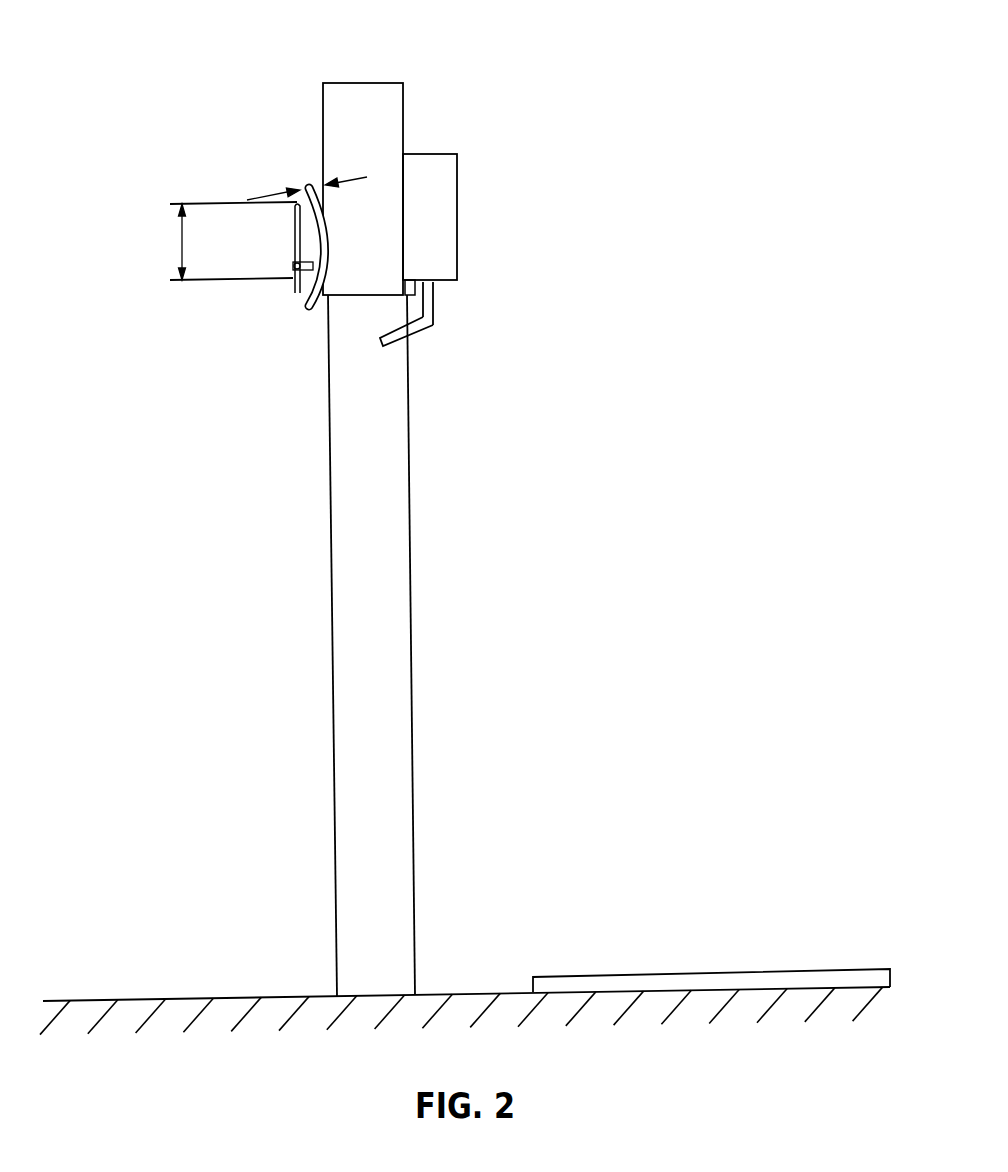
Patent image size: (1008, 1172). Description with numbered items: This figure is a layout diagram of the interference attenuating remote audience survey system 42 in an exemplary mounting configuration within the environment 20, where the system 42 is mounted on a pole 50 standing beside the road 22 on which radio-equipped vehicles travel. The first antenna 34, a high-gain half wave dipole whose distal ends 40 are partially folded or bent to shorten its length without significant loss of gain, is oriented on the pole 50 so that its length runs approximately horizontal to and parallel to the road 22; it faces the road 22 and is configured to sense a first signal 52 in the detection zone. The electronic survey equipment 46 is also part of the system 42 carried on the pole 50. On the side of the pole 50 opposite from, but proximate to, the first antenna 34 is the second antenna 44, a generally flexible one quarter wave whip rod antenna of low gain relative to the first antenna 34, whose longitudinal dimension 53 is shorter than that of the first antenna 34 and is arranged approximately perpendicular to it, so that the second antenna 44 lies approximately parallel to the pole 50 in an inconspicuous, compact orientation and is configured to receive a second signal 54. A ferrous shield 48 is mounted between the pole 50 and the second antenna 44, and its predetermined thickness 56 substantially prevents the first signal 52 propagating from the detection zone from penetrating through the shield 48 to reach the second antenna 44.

The environment 20 is at (686, 1072).
The road 22 is at (715, 970).
The first antenna 34 is at (436, 302).
The distal ends 40 is at (422, 333).
The interference attenuating remote audience survey system 42 is at (503, 170).
The second antenna 44 is at (293, 237).
The electronic survey equipment 46 is at (432, 154).
The ferrous shield 48 is at (310, 312).
The pole 50 is at (365, 82).
The first signal 52 is at (540, 396).
The longitudinal dimension 53 is at (178, 242).
The second signal 54 is at (140, 144).
The predetermined thickness 56 is at (348, 177).